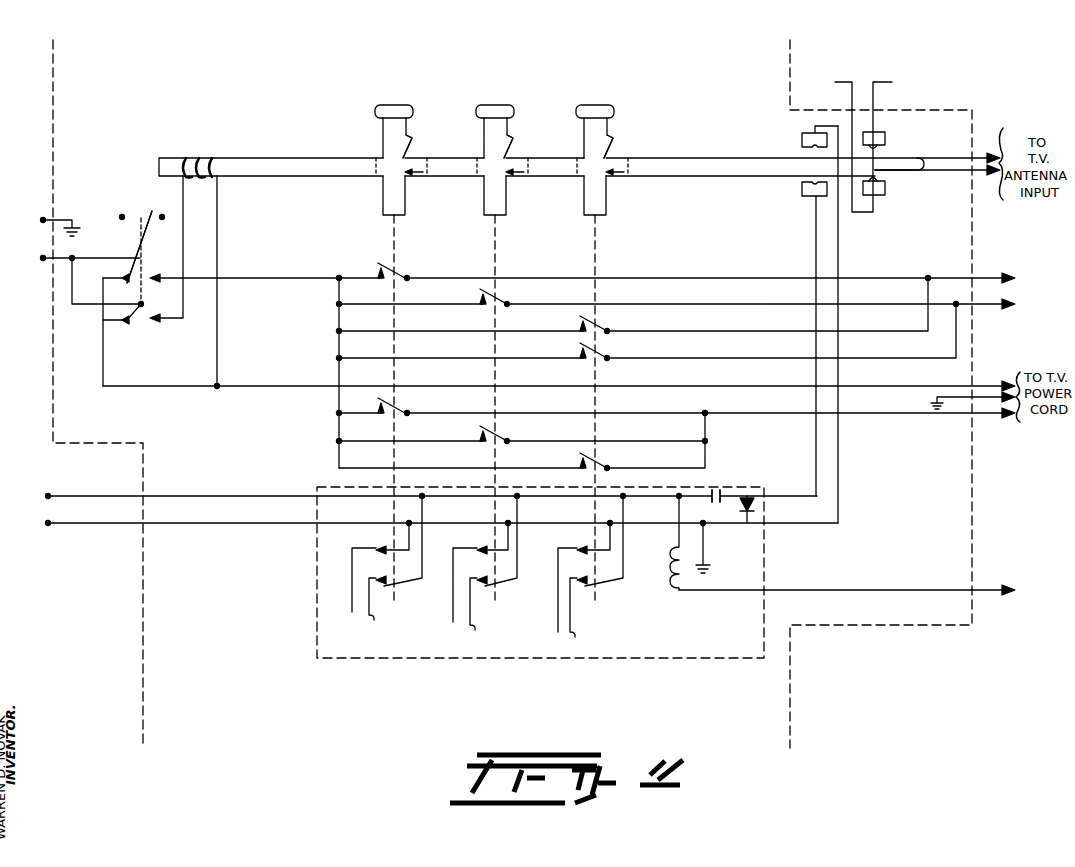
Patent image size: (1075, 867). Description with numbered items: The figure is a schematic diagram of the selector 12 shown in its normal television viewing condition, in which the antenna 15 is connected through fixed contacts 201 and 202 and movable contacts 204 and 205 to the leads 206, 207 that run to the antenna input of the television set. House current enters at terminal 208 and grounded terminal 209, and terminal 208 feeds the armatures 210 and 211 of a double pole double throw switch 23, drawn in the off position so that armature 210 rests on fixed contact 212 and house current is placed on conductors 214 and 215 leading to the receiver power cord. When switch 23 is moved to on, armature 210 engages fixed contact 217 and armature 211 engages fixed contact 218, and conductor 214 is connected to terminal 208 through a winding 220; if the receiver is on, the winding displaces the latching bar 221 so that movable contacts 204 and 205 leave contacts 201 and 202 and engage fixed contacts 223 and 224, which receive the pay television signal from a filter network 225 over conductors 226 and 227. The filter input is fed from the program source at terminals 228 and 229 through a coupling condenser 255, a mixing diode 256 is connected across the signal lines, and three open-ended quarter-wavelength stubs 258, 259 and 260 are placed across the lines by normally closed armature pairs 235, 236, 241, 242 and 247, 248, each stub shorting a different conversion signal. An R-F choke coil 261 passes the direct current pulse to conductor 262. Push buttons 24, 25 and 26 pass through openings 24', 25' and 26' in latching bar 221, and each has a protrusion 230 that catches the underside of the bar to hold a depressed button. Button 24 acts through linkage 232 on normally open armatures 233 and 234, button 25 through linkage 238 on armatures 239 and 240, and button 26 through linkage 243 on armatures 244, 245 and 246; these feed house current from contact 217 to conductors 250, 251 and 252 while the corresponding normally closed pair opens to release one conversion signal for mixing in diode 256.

The selector 12 is at (103, 443).
The antenna 15 is at (844, 82).
The double pole double throw switch 23 is at (149, 220).
The push button 24 is at (401, 152).
The push button 25 is at (502, 152).
The push button 26 is at (602, 152).
The opening 24' is at (419, 182).
The opening 25' is at (520, 182).
The opening 26' is at (620, 182).
The fixed contact 201 is at (885, 133).
The fixed contact 202 is at (885, 194).
The movable contact 204 is at (879, 150).
The movable contact 205 is at (879, 177).
The antenna lead 206 is at (932, 158).
The antenna lead 207 is at (932, 170).
The terminal 208 is at (43, 261).
The grounded terminal 209 is at (43, 217).
The armature 210 is at (140, 262).
The armature 211 is at (135, 323).
The fixed contact 212 is at (126, 285).
The conductor 214 is at (934, 386).
The conductor 215 is at (958, 410).
The fixed contact 217 is at (156, 282).
The fixed contact 218 is at (157, 322).
The winding 220 is at (207, 157).
The latching bar 221 is at (344, 157).
The fixed contact 223 is at (802, 137).
The fixed contact 224 is at (802, 191).
The filter network 225 is at (765, 564).
The conductor 226 is at (839, 240).
The conductor 227 is at (814, 243).
The terminal 228 is at (50, 521).
The terminal 229 is at (50, 494).
The protrusion 230 is at (413, 138).
The linkage 232 is at (396, 238).
The normally open switch armature 233 is at (399, 268).
The normally open switch armature 234 is at (399, 404).
The normally closed switch armature 235 is at (390, 547).
The normally closed switch armature 236 is at (399, 589).
The linkage 238 is at (497, 238).
The normally open switch armature 239 is at (500, 296).
The normally open switch armature 240 is at (499, 431).
The normally closed armature 241 is at (491, 547).
The normally closed armature 242 is at (501, 589).
The linkage 243 is at (597, 238).
The normally open switch armature 244 is at (600, 323).
The normally open switch armature 245 is at (600, 351).
The normally open switch armature 246 is at (599, 458).
The normally closed armature 247 is at (591, 547).
The normally closed armature 248 is at (601, 589).
The conductor 250 is at (935, 278).
The conductor 251 is at (968, 304).
The conductor 252 is at (931, 410).
The coupling condenser 255 is at (720, 503).
The mixing diode 256 is at (757, 505).
The quarter wavelength stub 258 is at (362, 592).
The quarter wavelength stub 259 is at (464, 596).
The quarter wavelength stub 260 is at (565, 600).
The R-F choke coil 261 is at (673, 572).
The conductor 262 is at (933, 590).